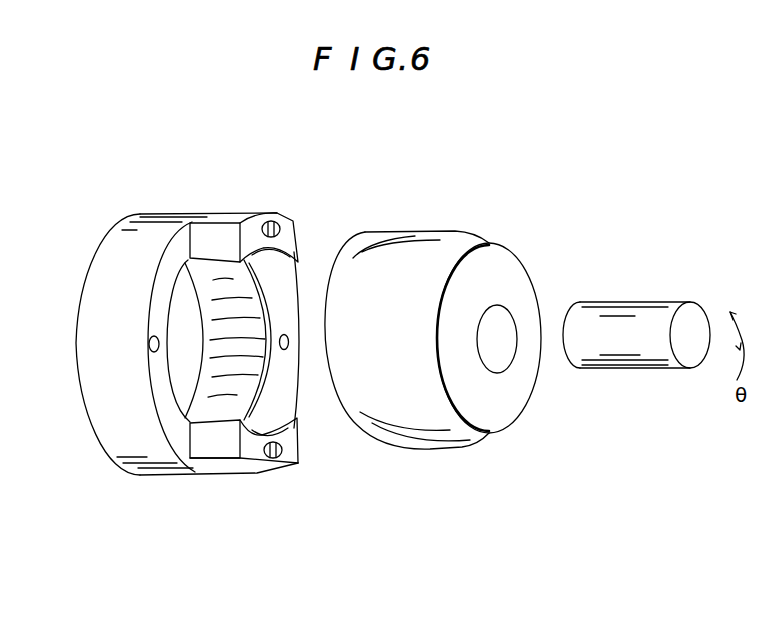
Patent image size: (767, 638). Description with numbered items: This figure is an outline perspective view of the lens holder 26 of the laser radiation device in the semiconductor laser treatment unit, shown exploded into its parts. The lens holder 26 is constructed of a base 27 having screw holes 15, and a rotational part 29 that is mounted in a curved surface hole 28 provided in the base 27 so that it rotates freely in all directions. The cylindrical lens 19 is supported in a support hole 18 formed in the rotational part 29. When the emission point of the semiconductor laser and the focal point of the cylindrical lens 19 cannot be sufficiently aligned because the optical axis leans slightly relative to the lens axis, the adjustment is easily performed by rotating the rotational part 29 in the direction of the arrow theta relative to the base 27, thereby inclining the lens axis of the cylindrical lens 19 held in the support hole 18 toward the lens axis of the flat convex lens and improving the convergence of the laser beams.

The lens holder 26 is at (457, 145).
The base 27 is at (188, 216).
The curved surface hole 28 is at (223, 410).
The screw holes 15 is at (283, 343).
The rotational part 29 is at (418, 232).
The support hole 18 is at (497, 318).
The cylindrical lens 19 is at (613, 310).